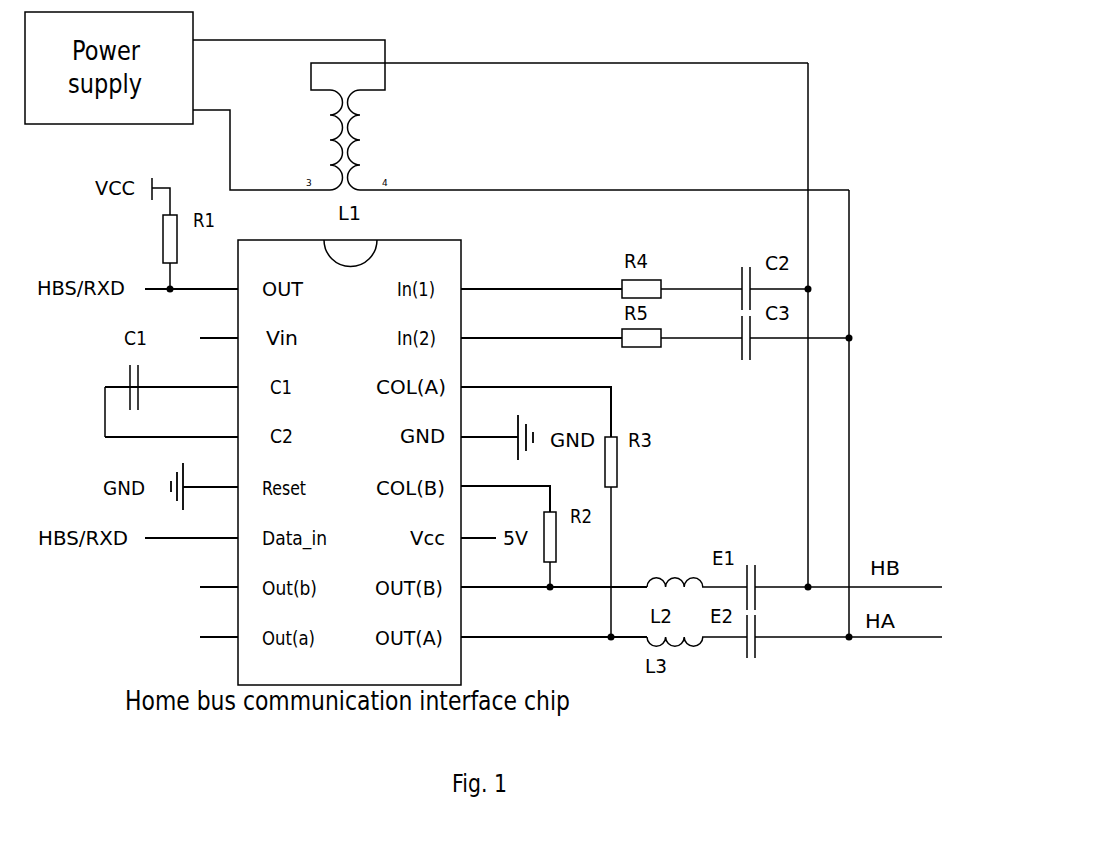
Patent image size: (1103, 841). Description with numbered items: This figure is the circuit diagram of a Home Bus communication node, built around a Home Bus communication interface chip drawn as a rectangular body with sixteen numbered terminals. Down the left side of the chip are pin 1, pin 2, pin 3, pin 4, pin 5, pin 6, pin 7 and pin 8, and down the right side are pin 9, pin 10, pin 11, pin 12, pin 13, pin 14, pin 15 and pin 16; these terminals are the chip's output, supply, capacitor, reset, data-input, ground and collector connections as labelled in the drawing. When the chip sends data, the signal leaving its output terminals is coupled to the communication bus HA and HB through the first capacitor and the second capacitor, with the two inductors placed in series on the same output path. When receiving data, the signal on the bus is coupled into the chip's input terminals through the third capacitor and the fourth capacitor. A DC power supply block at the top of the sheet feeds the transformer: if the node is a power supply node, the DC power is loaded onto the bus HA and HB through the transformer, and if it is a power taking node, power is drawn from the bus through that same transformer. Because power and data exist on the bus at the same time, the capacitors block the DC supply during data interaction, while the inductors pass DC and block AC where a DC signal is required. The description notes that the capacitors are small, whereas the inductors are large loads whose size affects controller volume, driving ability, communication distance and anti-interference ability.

The OUT pin 1 is at (191, 282).
The Vin pin 2 is at (219, 331).
The C1 pin 3 is at (171, 380).
The C2 pin 4 is at (171, 430).
The Reset pin 5 is at (210, 480).
The Data_in pin 6 is at (191, 531).
The Out(b) pin 7 is at (219, 580).
The Out(a) pin 8 is at (219, 630).
The OUT(A) pin 9 is at (554, 630).
The OUT(B) pin 10 is at (554, 580).
The Vcc pin 11 is at (478, 531).
The COL(B) pin 12 is at (505, 492).
The GND pin 13 is at (489, 430).
The COL(A) pin 14 is at (536, 405).
The In(2) pin 15 is at (541, 331).
The In(1) pin 16 is at (541, 282).